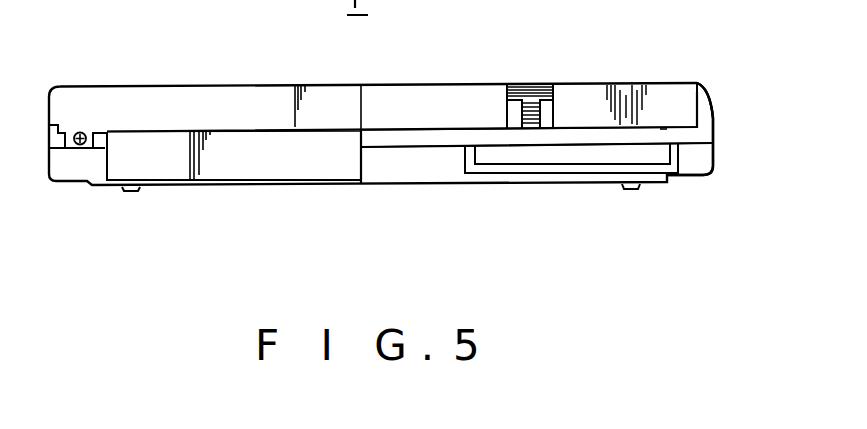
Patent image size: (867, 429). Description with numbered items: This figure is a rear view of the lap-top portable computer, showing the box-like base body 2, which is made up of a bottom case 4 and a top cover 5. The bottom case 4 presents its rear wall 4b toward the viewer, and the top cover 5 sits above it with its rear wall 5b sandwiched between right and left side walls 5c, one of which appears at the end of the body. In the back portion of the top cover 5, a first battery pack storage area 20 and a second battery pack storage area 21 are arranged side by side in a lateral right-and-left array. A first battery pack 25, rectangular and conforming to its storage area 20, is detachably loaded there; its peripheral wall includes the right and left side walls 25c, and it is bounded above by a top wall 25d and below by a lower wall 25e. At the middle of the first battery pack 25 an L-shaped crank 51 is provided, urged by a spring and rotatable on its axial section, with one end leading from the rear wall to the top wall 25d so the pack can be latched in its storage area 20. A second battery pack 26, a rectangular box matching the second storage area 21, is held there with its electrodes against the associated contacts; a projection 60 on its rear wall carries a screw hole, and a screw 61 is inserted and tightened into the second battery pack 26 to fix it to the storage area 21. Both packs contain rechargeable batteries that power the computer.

The base body 2 is at (760, 88).
The bottom case 4 is at (703, 163).
The rear wall 4b is at (527, 173).
The top cover 5 is at (703, 120).
The rear wall 5b is at (592, 146).
The side walls 5c is at (703, 92).
The first battery pack storage area 20 is at (441, 128).
The second battery pack storage area 21 is at (189, 131).
The first battery pack 25 is at (443, 100).
The side walls 25c is at (699, 100).
The top wall 25d is at (606, 90).
The lower wall 25e is at (661, 129).
The second battery pack 26 is at (246, 100).
The crank 51 is at (535, 95).
The projection 60 is at (72, 130).
The screw 61 is at (81, 145).